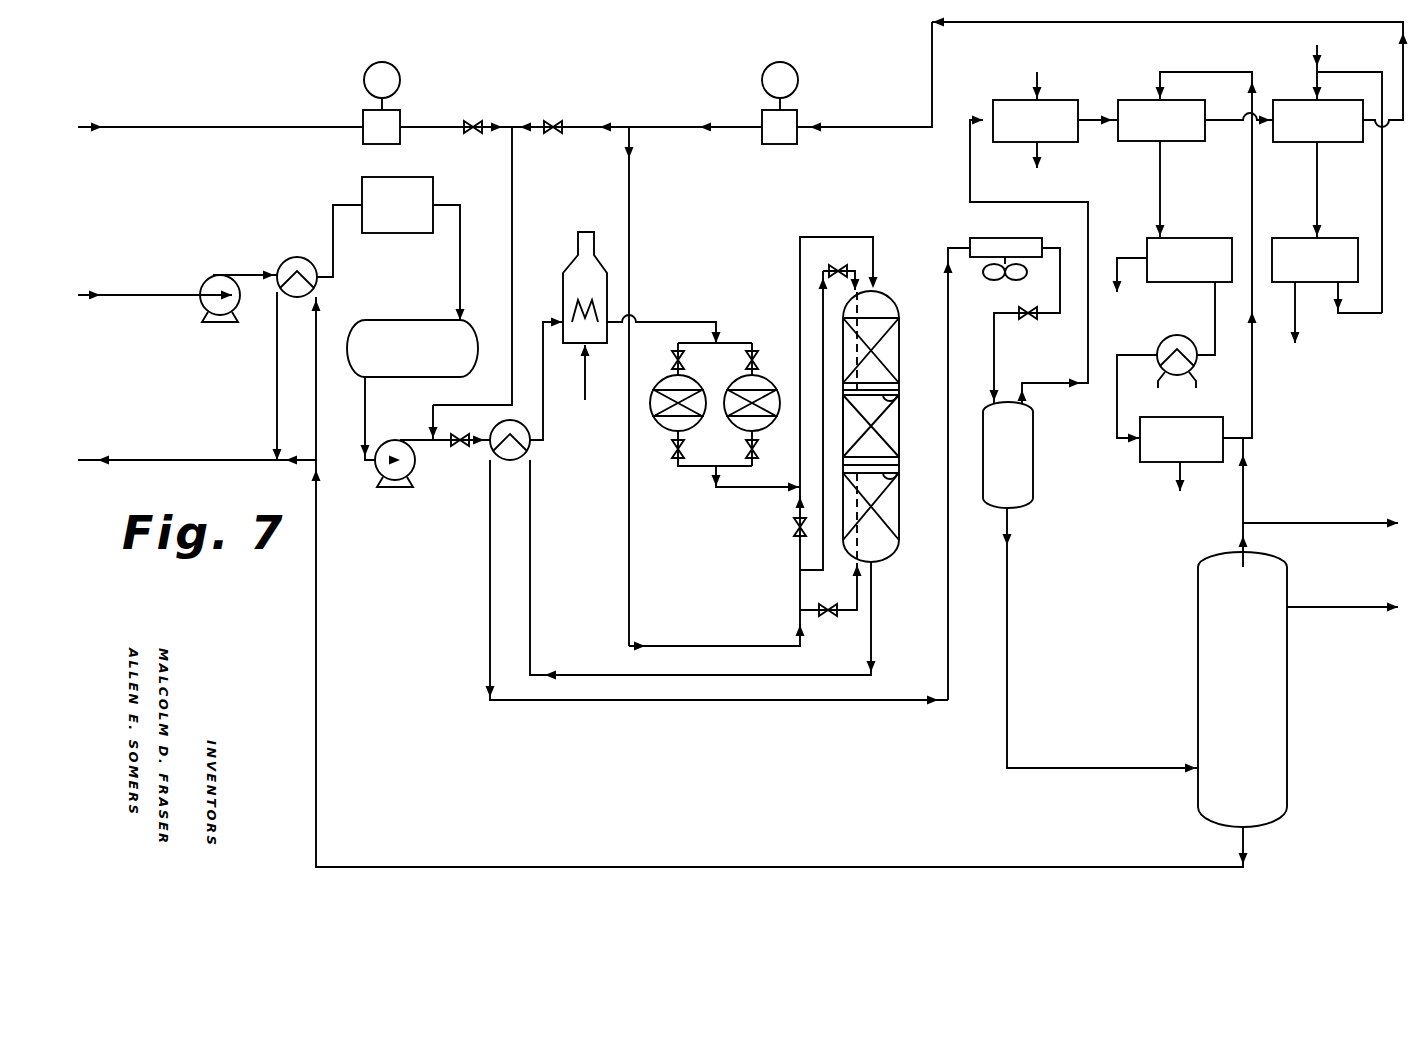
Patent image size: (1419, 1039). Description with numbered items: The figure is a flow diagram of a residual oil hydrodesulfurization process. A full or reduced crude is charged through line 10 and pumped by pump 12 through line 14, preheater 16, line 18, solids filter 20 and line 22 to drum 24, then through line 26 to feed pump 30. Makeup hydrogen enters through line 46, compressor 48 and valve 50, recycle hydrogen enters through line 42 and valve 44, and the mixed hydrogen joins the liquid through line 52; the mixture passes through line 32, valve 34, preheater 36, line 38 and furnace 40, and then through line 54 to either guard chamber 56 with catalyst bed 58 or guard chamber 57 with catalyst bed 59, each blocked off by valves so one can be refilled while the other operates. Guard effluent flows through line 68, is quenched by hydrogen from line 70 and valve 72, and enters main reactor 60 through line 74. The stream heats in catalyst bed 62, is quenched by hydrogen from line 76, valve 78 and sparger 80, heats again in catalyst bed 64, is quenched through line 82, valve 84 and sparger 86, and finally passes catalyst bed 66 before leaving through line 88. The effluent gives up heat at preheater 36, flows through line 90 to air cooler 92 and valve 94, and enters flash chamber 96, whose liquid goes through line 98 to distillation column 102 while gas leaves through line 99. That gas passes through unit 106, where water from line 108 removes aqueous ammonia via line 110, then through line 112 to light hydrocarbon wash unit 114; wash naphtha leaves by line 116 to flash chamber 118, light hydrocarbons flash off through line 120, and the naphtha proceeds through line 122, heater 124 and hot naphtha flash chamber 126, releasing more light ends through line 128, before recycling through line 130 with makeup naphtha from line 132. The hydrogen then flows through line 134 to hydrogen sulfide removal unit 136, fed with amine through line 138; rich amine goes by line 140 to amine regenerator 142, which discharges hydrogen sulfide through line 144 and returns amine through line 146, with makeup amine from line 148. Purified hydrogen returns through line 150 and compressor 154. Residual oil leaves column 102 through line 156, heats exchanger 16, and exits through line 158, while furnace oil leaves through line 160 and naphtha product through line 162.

The line 10 is at (192, 290).
The pump 12 is at (236, 310).
The line 14 is at (262, 270).
The preheater 16 is at (300, 242).
The line 18 is at (333, 213).
The solids filter 20 is at (433, 185).
The line 22 is at (462, 240).
The drum 24 is at (418, 320).
The line 26 is at (372, 395).
The feed pump 30 is at (413, 472).
The line 32 is at (426, 430).
The valve 34 is at (462, 433).
The preheater 36 is at (530, 450).
The line 38 is at (543, 372).
The furnace 40 is at (590, 232).
The line 42 is at (614, 129).
The valve 44 is at (556, 120).
The line 46 is at (138, 129).
The compressor 48 is at (400, 140).
The valve 50 is at (470, 135).
The line 52 is at (514, 250).
The line 54 is at (718, 326).
The guard chamber 56 is at (660, 372).
The guard chamber 57 is at (758, 372).
The bed of catalyst 58 is at (662, 428).
The bed of catalyst 59 is at (770, 426).
The main reactor 60 is at (899, 300).
The catalyst bed 62 is at (895, 352).
The catalyst bed 64 is at (893, 442).
The catalyst bed 66 is at (890, 528).
The line 68 is at (762, 487).
The line 70 is at (687, 646).
The valve 72 is at (796, 532).
The line 74 is at (875, 243).
The line 76 is at (823, 318).
The valve 78 is at (838, 268).
The sparger 80 is at (897, 400).
The line 82 is at (810, 612).
The valve 84 is at (828, 618).
The sparger 86 is at (897, 478).
The line 88 is at (727, 675).
The line 90 is at (675, 700).
The air cooler 92 is at (972, 258).
The valve 94 is at (1028, 308).
The flash chamber 96 is at (983, 466).
The line 98 is at (1007, 612).
The line 99 is at (1090, 206).
The distillation column 102 is at (1288, 732).
The unit 106 is at (1010, 100).
The line 108 is at (1040, 80).
The line 110 is at (1027, 150).
The line 112 is at (1086, 123).
The light hydrocarbon wash unit 114 is at (1180, 142).
The line 116 is at (1162, 202).
The flash chamber 118 is at (1198, 238).
The line 120 is at (1130, 258).
The line 122 is at (1215, 292).
The heater 124 is at (1197, 362).
The hot naphtha flash chamber 126 is at (1186, 417).
The line 128 is at (1183, 470).
The line 130 is at (1252, 184).
The line 132 is at (1245, 476).
The line 134 is at (1230, 116).
The hydrogen sulfide removal unit 136 is at (1325, 142).
The line 138 is at (1317, 80).
The line 140 is at (1317, 186).
The amine regenerator 142 is at (1328, 238).
The line 144 is at (1298, 324).
The line 146 is at (1356, 314).
The line 148 is at (1320, 52).
The line 150 is at (953, 28).
The compressor 154 is at (762, 140).
The line 156 is at (1148, 867).
The line 158 is at (258, 460).
The line 160 is at (1325, 610).
The line 162 is at (1325, 526).